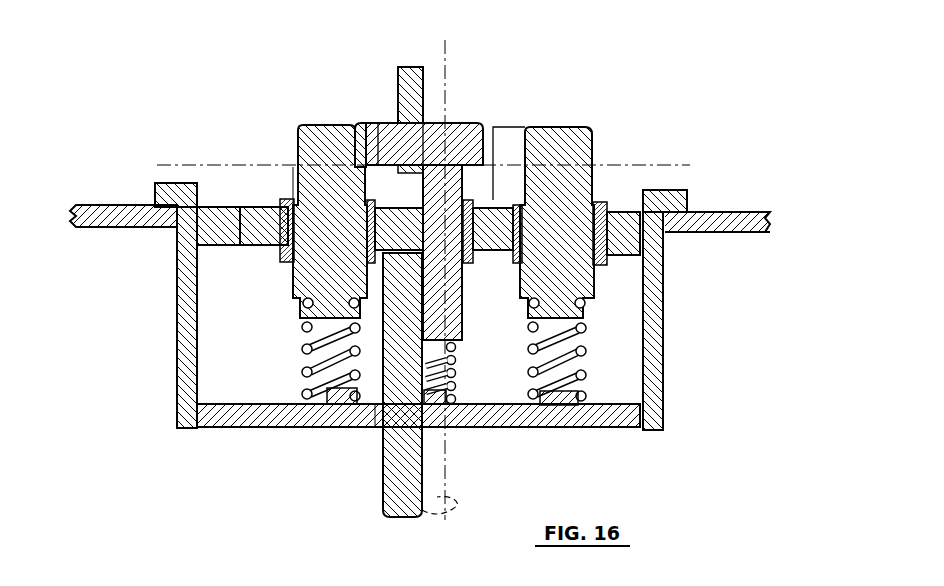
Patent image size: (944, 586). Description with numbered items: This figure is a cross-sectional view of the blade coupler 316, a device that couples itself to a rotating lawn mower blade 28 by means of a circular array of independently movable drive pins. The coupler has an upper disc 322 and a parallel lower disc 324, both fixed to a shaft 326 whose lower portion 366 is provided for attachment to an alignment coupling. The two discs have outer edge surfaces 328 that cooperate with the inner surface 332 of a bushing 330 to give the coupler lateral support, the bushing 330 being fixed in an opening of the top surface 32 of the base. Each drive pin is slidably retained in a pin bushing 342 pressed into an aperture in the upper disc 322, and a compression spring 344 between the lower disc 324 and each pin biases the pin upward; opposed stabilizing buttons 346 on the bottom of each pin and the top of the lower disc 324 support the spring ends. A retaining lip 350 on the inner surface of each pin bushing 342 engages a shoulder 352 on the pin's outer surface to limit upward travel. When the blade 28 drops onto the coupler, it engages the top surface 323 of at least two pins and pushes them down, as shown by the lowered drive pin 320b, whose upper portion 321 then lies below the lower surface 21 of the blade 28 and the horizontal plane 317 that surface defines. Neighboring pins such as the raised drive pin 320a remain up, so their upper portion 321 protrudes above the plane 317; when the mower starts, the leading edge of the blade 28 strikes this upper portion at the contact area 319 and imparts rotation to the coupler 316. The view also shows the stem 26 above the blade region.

The lower surface 21 is at (368, 170).
The valve stem 26 is at (400, 66).
The rotating blade 28 is at (455, 123).
The top surface 32 is at (765, 210).
The blade coupler 316 is at (643, 97).
The horizontal plane 317 is at (193, 180).
The contact area 319 is at (357, 124).
The raised drive pin 320a is at (296, 195).
The lowered drive pin 320b is at (462, 384).
The upper portion 321 is at (330, 142).
The upper disc 322 is at (652, 246).
The top surface 323 is at (298, 124).
The lower disc 324 is at (615, 430).
The shaft 326 is at (373, 407).
The outer edge surfaces 328 is at (660, 262).
The bushing 330 is at (692, 194).
The inner surface 332 is at (640, 353).
The pin bushing 342 is at (281, 200).
The compression spring 344 is at (302, 370).
The stabilizing button 346 is at (304, 308).
The retaining lip 350 is at (285, 198).
The shoulder 352 is at (293, 208).
The lower portion 366 is at (460, 498).